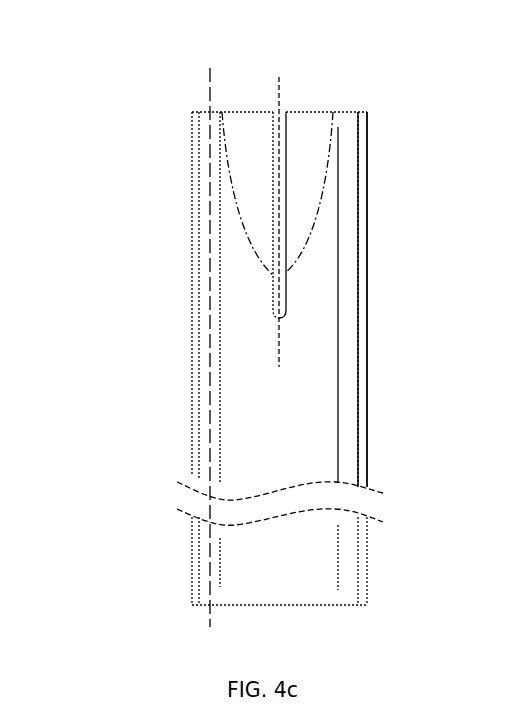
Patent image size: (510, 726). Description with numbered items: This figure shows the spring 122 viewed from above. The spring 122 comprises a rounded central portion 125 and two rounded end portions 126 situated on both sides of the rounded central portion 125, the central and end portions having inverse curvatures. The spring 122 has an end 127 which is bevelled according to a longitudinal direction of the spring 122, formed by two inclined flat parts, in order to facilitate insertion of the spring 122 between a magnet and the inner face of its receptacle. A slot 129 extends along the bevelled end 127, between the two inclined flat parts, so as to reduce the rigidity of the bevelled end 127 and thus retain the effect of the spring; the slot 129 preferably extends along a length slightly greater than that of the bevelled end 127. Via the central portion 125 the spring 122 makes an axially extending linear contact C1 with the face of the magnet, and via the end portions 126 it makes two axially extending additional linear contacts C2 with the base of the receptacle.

The spring 122 is at (141, 294).
The rounded central portion 125 is at (301, 427).
The rounded end portions 126 is at (210, 207).
The bevelled end 127 is at (308, 155).
The slot 129 is at (286, 225).
The linear contact C1 is at (279, 92).
The additional linear contacts C2 is at (208, 88).